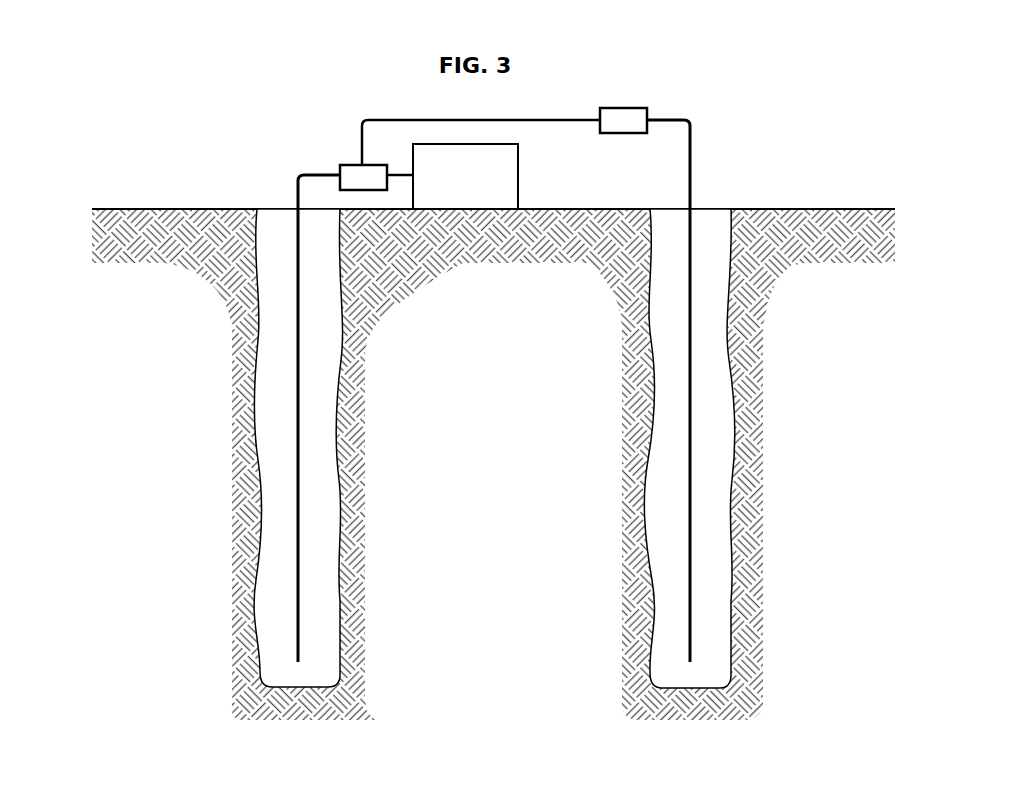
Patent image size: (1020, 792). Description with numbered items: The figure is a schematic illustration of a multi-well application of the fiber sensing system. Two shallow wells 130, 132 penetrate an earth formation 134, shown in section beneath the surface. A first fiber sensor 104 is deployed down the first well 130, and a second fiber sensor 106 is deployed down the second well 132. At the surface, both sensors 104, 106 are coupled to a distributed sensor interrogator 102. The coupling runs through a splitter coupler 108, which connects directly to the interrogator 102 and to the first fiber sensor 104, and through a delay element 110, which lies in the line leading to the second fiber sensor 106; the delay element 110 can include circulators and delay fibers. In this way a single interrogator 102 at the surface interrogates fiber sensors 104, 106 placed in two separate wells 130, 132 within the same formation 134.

The distributed sensor interrogator 102 is at (450, 188).
The first fiber sensor 104 is at (298, 362).
The second fiber sensor 106 is at (690, 403).
The splitter coupler 108 is at (352, 164).
The delay element 110 is at (619, 108).
The shallow well 130 is at (249, 541).
The shallow well 132 is at (742, 539).
The earth formation 134 is at (386, 288).